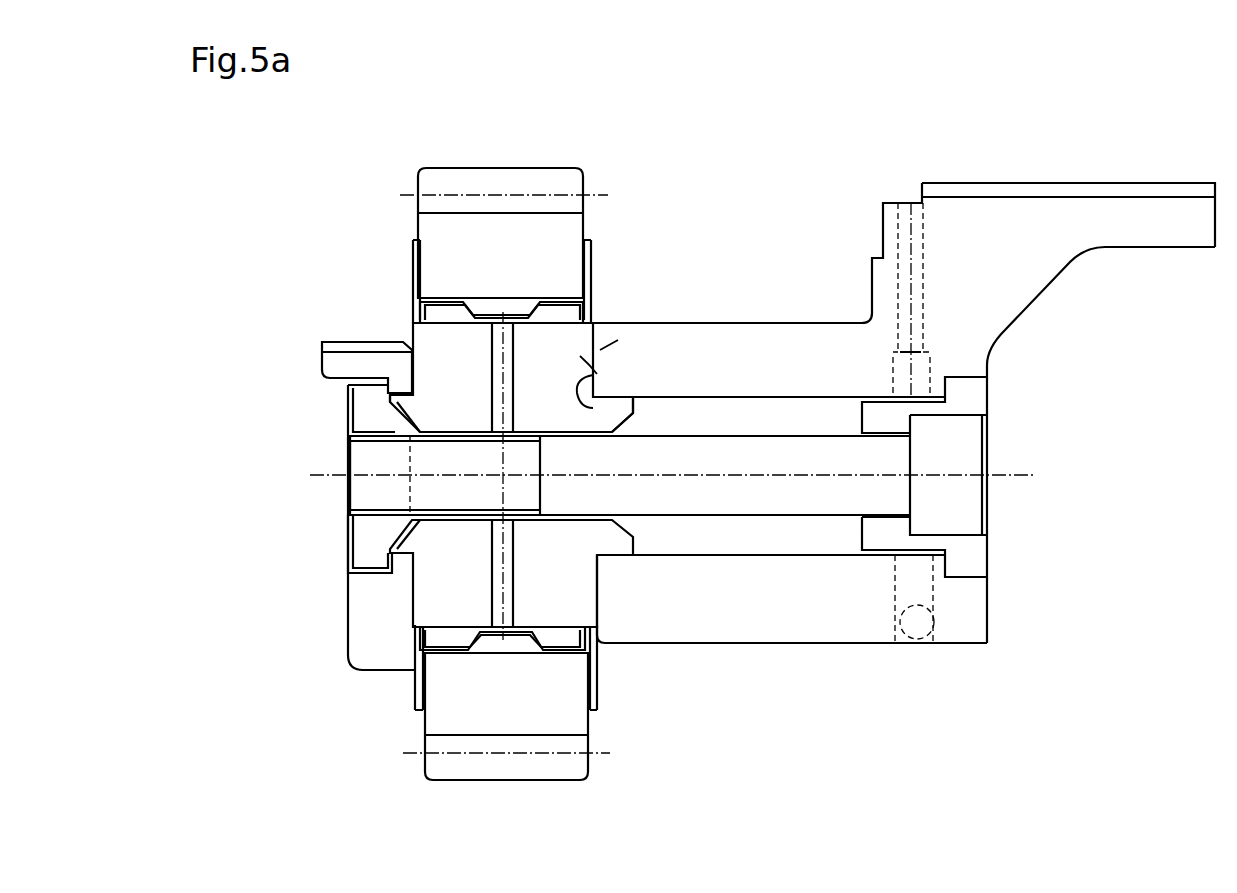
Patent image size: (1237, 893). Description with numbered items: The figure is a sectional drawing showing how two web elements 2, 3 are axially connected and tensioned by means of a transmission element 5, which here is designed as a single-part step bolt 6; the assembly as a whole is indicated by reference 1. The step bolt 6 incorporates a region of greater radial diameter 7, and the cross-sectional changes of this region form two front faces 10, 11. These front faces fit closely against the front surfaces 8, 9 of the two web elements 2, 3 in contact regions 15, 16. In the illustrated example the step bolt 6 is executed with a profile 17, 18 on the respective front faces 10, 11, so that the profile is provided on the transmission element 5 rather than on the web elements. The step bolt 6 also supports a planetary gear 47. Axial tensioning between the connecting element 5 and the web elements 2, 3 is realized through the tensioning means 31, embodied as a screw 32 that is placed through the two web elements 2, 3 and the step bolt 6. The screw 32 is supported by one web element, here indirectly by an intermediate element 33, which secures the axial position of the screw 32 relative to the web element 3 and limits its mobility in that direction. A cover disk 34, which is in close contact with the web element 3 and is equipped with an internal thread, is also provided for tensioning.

The housing body 1 is at (780, 184).
The web element 2 is at (992, 238).
The web element 3 is at (412, 338).
The transmission element 5 is at (542, 474).
The step bolt 6 is at (578, 572).
The region of greater radial diameter 7 is at (618, 340).
The front surface 8 is at (598, 400).
The front surface 9 is at (347, 393).
The front face 10 is at (600, 395).
The front face 11 is at (330, 363).
The contact region 15 is at (606, 268).
The contact region 16 is at (396, 272).
The profile 17 is at (597, 374).
The profile 18 is at (412, 583).
The tensioning means 31 is at (314, 485).
The screw 32 is at (782, 487).
The intermediate element 33 is at (973, 400).
The cover disk 34 is at (367, 552).
The planetary gear 47 is at (564, 228).